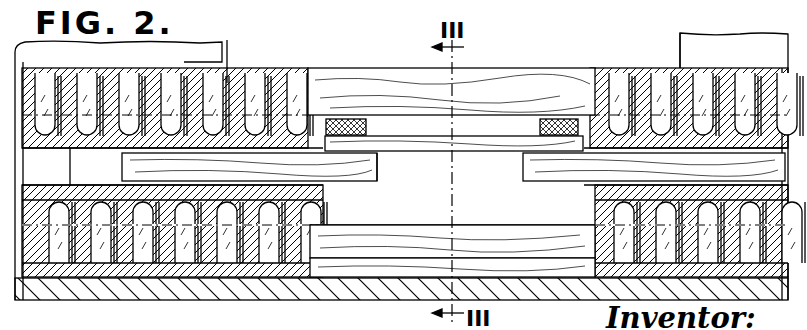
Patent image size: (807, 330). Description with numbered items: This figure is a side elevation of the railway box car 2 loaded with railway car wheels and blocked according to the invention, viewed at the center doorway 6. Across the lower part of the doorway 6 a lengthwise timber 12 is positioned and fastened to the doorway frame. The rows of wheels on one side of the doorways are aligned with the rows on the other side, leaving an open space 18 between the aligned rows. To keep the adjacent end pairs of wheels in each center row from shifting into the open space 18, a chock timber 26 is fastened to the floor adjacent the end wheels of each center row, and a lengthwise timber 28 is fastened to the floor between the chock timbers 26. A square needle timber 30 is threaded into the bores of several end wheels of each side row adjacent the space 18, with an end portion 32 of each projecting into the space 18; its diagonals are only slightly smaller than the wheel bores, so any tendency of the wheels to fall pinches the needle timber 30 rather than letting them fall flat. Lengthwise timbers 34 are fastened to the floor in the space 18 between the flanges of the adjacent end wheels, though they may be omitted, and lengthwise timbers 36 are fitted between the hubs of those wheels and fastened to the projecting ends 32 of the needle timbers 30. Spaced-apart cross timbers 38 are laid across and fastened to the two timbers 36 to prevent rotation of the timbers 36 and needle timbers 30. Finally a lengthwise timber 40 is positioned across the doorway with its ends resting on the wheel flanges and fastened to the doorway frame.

The railway box car 2 is at (114, 292).
The center doorway 6 is at (680, 45).
The lengthwise timber 12 is at (499, 234).
The open space 18 is at (436, 212).
The chock timber 26 is at (267, 294).
The lengthwise timber 28 is at (462, 258).
The square needle timber 30 is at (120, 165).
The end portion 32 is at (372, 181).
The lengthwise timber 34 is at (405, 268).
The lengthwise timber 36 is at (493, 146).
The cross timber 38 is at (343, 120).
The lengthwise timber 40 is at (492, 70).